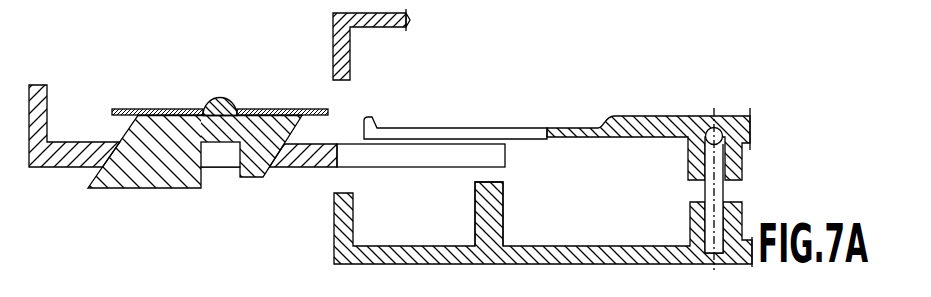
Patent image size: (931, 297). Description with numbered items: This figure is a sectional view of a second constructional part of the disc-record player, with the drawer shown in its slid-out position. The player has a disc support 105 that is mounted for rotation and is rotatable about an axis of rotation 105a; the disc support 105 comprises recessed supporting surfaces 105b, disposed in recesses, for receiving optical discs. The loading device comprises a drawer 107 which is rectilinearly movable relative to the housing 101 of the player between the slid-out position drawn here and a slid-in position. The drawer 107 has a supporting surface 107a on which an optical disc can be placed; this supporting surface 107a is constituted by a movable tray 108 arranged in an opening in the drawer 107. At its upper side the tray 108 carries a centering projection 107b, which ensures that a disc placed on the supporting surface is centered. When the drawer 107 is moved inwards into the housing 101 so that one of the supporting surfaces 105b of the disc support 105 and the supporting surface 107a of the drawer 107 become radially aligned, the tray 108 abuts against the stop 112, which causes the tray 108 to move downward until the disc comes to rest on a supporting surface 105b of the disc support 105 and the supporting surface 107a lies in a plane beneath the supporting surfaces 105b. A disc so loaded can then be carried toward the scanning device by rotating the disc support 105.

The housing 101 is at (334, 250).
The disc support 105 is at (606, 117).
The axis of rotation 105a is at (713, 110).
The supporting surface 105b is at (434, 128).
The drawer 107 is at (53, 167).
The supporting surface 107a is at (275, 108).
The centering projection 107b is at (214, 99).
The tray 108 is at (245, 172).
The stop 112 is at (503, 213).